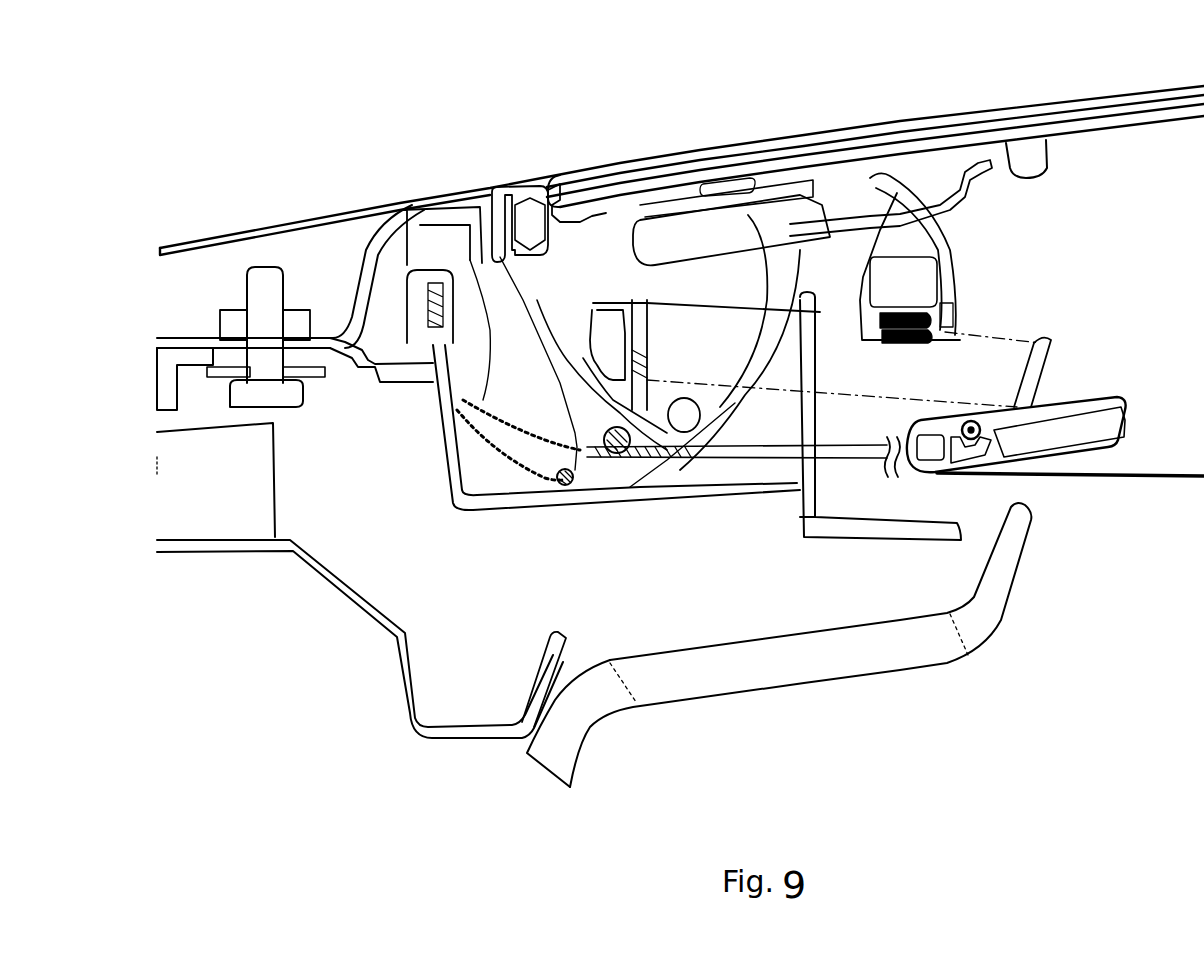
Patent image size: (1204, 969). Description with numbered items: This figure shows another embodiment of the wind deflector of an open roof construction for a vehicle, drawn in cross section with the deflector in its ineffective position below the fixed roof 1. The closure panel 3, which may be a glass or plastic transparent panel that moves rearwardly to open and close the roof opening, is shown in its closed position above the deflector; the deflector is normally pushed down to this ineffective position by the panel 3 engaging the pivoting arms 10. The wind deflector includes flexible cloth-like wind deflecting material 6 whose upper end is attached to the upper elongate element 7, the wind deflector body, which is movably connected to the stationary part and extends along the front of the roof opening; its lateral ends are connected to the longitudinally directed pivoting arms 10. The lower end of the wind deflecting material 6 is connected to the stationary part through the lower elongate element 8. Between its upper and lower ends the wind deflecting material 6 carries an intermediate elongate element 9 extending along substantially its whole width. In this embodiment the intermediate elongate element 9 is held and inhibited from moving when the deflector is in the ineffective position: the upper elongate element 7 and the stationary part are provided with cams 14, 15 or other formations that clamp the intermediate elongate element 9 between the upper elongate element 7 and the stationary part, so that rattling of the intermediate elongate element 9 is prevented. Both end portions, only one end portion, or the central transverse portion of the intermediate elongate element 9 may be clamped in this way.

The fixed roof 1 is at (267, 232).
The panel 3 is at (904, 133).
The wind deflecting material 6 is at (420, 205).
The upper elongate element 7 is at (623, 310).
The lower elongate element 8 is at (473, 228).
The intermediate elongate element 9 is at (490, 187).
The pivoting arms 10 is at (814, 390).
The cam 14 is at (748, 215).
The cam 15 is at (780, 358).